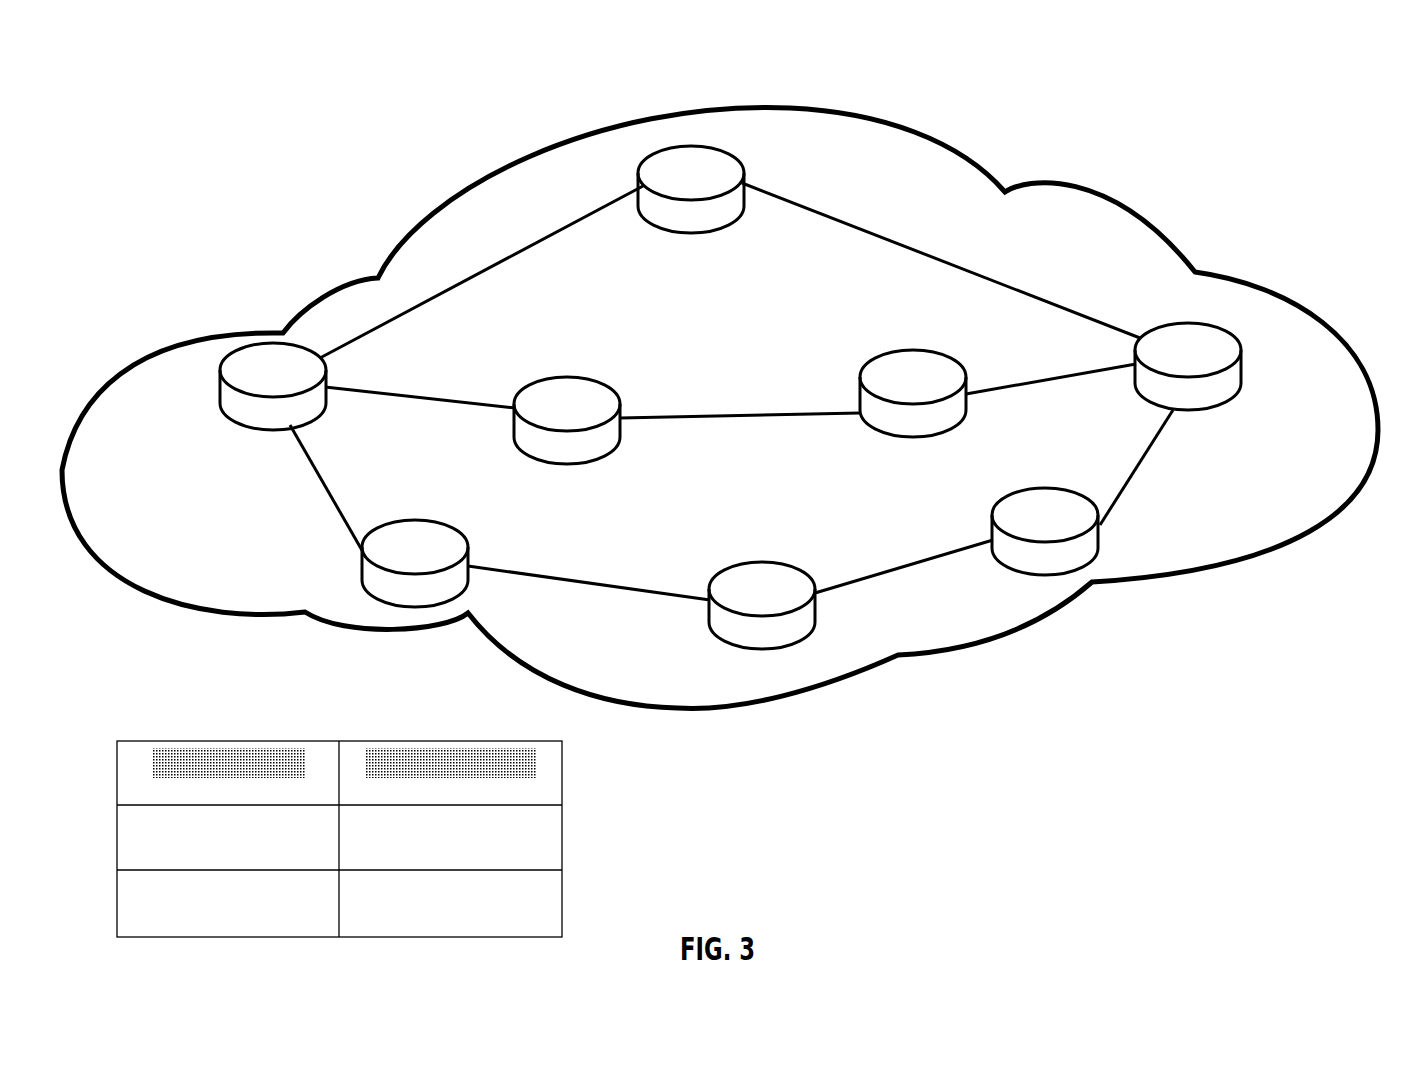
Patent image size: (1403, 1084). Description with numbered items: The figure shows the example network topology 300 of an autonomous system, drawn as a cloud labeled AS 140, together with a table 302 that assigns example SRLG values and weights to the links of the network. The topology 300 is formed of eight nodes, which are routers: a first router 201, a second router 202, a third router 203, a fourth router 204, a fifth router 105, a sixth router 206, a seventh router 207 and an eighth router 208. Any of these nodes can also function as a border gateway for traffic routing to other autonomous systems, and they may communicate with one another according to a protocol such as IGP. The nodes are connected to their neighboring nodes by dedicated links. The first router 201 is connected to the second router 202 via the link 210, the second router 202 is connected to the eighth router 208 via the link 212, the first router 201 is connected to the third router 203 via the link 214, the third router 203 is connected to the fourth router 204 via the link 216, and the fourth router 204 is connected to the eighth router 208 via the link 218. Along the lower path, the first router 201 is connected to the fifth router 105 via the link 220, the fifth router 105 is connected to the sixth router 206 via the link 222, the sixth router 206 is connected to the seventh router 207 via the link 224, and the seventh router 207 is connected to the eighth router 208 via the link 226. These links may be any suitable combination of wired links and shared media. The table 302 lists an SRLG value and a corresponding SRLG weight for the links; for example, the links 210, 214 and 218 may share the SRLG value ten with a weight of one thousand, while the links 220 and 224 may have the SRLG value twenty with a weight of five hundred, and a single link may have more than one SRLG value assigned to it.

The topology 300 is at (720, 375).
The AS 140 is at (226, 554).
The R1 201 is at (223, 409).
The R2 202 is at (639, 185).
The R3 203 is at (516, 446).
The R4 204 is at (859, 381).
The router R5 105 is at (425, 610).
The R6 206 is at (724, 645).
The R7 207 is at (1003, 578).
The R8 208 is at (1213, 408).
The link 210 is at (548, 243).
The link 212 is at (899, 245).
The link 214 is at (401, 406).
The link 216 is at (759, 418).
The link 218 is at (1036, 388).
The link 220 is at (303, 466).
The link 222 is at (567, 583).
The link 224 is at (907, 568).
The link 226 is at (1127, 493).
The table 302 is at (562, 806).